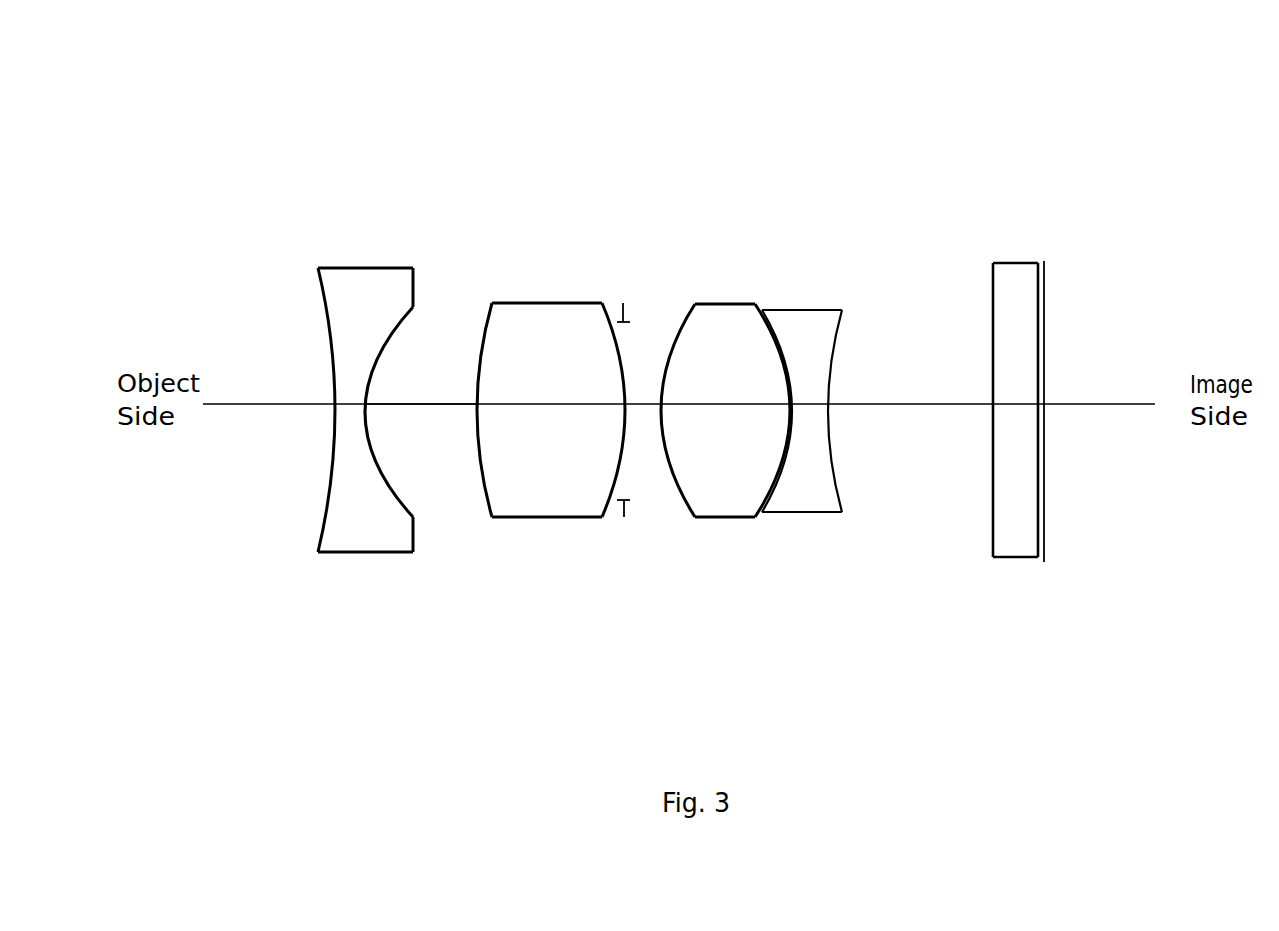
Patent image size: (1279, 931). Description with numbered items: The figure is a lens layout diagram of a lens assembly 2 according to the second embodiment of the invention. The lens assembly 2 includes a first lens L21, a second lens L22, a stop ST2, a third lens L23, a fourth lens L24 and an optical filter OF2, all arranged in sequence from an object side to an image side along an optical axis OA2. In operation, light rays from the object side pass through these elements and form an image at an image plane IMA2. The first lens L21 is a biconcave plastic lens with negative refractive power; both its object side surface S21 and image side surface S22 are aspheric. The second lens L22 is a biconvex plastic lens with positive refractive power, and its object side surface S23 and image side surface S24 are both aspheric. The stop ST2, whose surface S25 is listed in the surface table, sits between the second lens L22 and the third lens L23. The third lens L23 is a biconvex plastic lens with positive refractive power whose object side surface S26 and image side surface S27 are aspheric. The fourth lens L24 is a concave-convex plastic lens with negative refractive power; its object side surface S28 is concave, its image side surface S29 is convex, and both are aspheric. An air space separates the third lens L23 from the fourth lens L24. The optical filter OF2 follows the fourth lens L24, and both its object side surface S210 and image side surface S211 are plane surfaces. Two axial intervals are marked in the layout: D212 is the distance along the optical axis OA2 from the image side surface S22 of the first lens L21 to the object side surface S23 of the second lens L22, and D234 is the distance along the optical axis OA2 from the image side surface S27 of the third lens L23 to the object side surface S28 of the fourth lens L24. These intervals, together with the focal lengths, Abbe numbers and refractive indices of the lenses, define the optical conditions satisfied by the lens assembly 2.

The lens assembly 2 is at (180, 87).
The optical axis OA2 is at (282, 405).
The first lens L21 is at (321, 407).
The second lens L22 is at (551, 429).
The third lens L23 is at (739, 433).
The fourth lens L24 is at (853, 436).
The stop ST2 is at (644, 406).
The optical filter OF2 is at (1001, 412).
The image plane IMA2 is at (1044, 261).
The object side surface of the first lens S21 is at (328, 505).
The image side surface of the first lens S22 is at (397, 502).
The object side surface of the second lens S23 is at (487, 500).
The image side surface of the second lens S24 is at (615, 477).
The stop surface S25 is at (624, 517).
The object side surface of the third lens S26 is at (670, 477).
The image side surface of the third lens S27 is at (772, 483).
The object side surface of the fourth lens S28 is at (788, 447).
The image side surface of the fourth lens S29 is at (833, 490).
The object side surface of the optical filter S210 is at (993, 520).
The image side surface of the optical filter S211 is at (1038, 525).
The interval between the first lens and the second lens D212 is at (462, 404).
The interval between the third lens and the fourth lens D234 is at (790, 468).